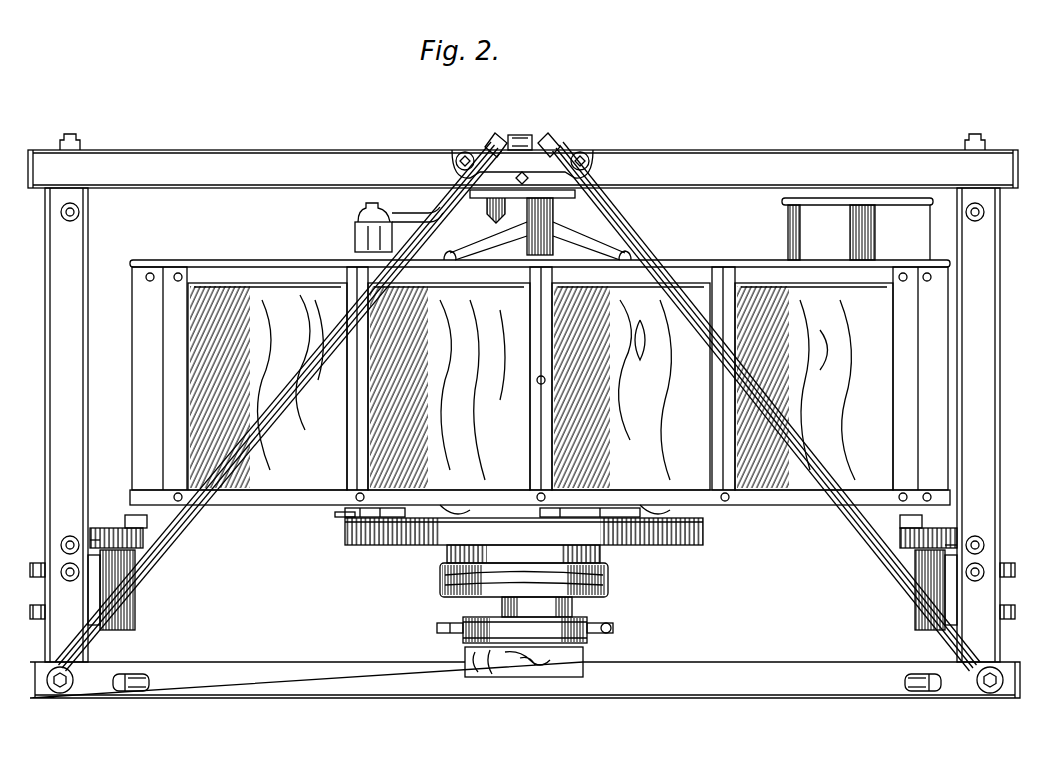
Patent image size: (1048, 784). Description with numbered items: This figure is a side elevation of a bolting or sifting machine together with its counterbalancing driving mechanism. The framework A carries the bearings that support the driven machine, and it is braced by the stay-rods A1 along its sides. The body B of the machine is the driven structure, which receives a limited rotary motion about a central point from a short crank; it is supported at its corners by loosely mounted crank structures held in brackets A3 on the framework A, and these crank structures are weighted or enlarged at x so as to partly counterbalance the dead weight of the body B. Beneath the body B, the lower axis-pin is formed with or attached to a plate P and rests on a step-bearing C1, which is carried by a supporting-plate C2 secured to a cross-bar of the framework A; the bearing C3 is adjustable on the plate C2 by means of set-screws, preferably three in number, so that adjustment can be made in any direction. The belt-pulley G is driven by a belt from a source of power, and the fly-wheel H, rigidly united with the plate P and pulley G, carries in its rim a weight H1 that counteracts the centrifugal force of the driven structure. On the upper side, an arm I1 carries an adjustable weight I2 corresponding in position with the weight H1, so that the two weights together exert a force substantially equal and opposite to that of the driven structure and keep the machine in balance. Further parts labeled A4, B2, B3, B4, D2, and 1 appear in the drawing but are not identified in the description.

The framework A is at (730, 152).
The stay-rods A1 is at (200, 520).
The brackets A3 is at (135, 612).
The wooden block A4 is at (524, 662).
The body of driven structure B is at (132, 368).
The panel frame bracket B2 is at (107, 528).
The strut B3 is at (476, 249).
The upper bin B4 is at (857, 229).
The step-bearing C1 is at (572, 605).
The supporting-plate C2 is at (437, 628).
The bearing C3 is at (608, 626).
The brace rod nut D2 is at (487, 138).
The driving-pulley G is at (440, 582).
The fly-wheel H is at (450, 530).
The weight H1 is at (330, 513).
The arm I1 is at (404, 220).
The weight I2 is at (355, 240).
The plate P is at (600, 556).
The vertical shaft 1 is at (560, 200).
The weighted portions x is at (104, 536).